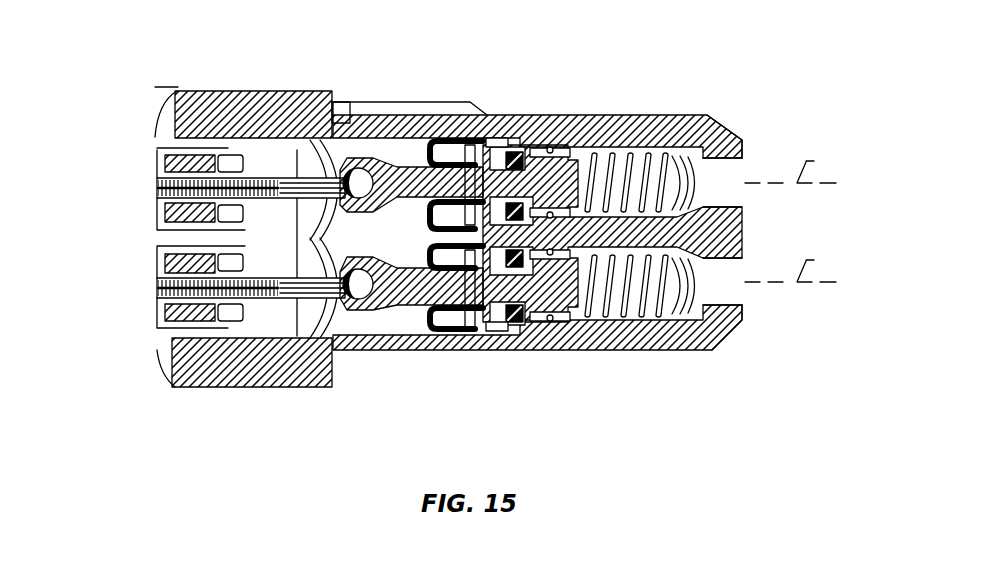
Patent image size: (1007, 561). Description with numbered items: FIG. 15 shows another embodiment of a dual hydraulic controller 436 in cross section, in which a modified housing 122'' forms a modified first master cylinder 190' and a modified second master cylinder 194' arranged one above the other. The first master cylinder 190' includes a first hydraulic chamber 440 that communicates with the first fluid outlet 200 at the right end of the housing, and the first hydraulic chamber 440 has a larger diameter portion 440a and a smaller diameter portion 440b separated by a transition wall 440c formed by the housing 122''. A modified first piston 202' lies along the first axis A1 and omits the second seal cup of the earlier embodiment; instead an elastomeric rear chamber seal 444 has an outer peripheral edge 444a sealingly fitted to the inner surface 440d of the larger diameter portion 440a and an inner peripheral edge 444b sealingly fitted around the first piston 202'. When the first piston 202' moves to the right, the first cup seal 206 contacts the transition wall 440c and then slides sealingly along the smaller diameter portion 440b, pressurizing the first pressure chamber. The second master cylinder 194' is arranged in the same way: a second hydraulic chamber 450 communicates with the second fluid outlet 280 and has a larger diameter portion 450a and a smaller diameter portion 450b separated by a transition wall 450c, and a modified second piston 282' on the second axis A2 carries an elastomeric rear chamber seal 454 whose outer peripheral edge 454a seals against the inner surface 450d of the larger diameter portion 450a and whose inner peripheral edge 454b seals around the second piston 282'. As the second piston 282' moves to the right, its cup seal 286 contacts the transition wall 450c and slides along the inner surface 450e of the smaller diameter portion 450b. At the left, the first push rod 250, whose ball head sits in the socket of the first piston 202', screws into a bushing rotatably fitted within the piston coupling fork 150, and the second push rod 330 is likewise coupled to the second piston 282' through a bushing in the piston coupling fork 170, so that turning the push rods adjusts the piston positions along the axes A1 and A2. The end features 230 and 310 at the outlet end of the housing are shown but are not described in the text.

The piston coupling fork 150 is at (222, 172).
The piston coupling fork 170 is at (233, 318).
The first push rod 250 is at (273, 175).
The housing 122'' is at (262, 90).
The second push rod 330 is at (266, 300).
The second piston 282' is at (396, 345).
The first piston 202' is at (410, 127).
The rear chamber seal 444 is at (430, 230).
The outer peripheral edge 444a is at (445, 138).
The inner peripheral edge 444b is at (420, 212).
The rear chamber seal 454 is at (431, 324).
The outer peripheral edge 454a is at (466, 328).
The inner peripheral edge 454b is at (448, 332).
The first hydraulic chamber 440 is at (635, 187).
The larger diameter portion 440a is at (512, 150).
The smaller diameter portion 440b is at (665, 178).
The transition wall 440c is at (540, 160).
The inner surface 440d is at (490, 138).
The second hydraulic chamber 450 is at (597, 306).
The larger diameter portion 450a is at (510, 322).
The smaller diameter portion 450b is at (622, 318).
The transition wall 450c is at (522, 328).
The inner surface 450d is at (500, 330).
The inner surface 450e is at (675, 326).
The first cup seal 206 is at (538, 146).
The first cup seal 286 is at (513, 325).
The first master cylinder 190' is at (537, 108).
The second master cylinder 194' is at (537, 364).
The dual hydraulic controller 436 is at (682, 64).
The upper chamfered end 230 is at (729, 128).
The first fluid outlet 200 is at (730, 172).
The second fluid outlet 280 is at (733, 290).
The lower chamfered end 310 is at (729, 344).
The first axis A1 is at (793, 167).
The second axis A2 is at (793, 266).